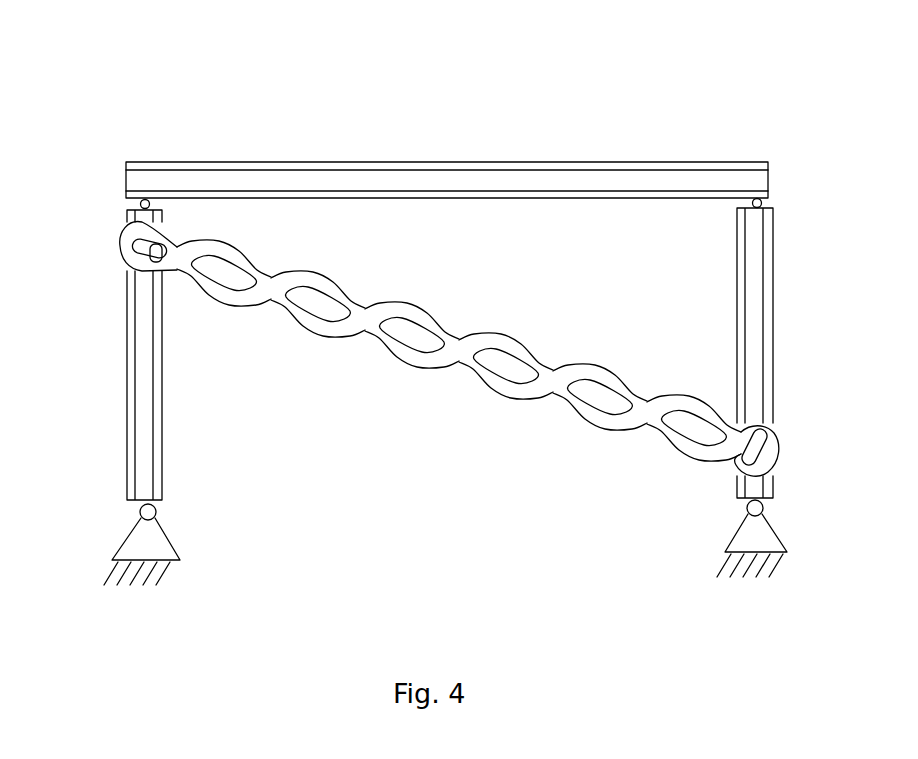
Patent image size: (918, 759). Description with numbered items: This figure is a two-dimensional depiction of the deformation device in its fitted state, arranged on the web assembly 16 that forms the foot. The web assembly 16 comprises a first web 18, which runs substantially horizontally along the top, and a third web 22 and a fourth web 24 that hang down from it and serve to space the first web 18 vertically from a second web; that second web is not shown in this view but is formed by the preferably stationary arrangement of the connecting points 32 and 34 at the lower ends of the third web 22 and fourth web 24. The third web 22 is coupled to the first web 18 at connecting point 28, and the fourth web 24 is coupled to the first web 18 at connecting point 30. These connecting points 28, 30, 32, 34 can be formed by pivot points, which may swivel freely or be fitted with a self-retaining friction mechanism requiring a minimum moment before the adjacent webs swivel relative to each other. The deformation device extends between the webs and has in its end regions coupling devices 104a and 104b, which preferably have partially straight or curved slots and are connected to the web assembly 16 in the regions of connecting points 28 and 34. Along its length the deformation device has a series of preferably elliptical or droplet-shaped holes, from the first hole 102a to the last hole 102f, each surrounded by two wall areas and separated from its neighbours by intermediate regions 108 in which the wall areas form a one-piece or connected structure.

The web assembly 16 is at (740, 93).
The first web 18 is at (336, 178).
The third web 22 is at (125, 322).
The fourth web 24 is at (773, 277).
The connecting point 28 is at (124, 197).
The connecting point 30 is at (773, 210).
The connecting point 32 is at (137, 509).
The connecting point 34 is at (762, 506).
The hole 102a is at (232, 276).
The hole 102f is at (692, 413).
The coupling device 104a is at (130, 248).
The coupling device 104b is at (318, 334).
The intermediate region 108 is at (460, 343).